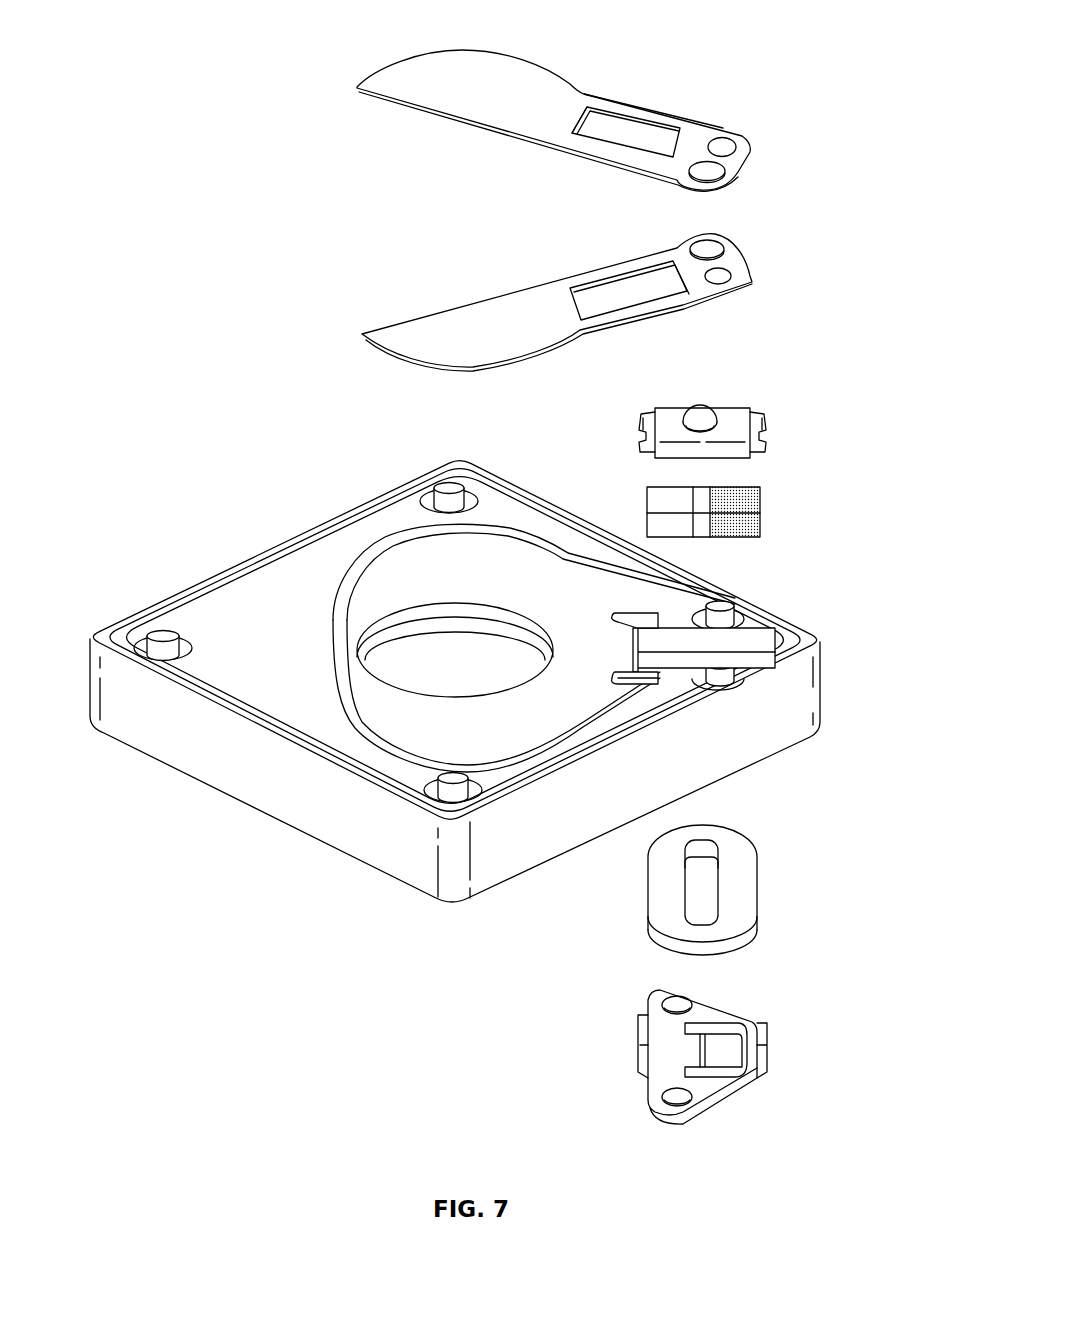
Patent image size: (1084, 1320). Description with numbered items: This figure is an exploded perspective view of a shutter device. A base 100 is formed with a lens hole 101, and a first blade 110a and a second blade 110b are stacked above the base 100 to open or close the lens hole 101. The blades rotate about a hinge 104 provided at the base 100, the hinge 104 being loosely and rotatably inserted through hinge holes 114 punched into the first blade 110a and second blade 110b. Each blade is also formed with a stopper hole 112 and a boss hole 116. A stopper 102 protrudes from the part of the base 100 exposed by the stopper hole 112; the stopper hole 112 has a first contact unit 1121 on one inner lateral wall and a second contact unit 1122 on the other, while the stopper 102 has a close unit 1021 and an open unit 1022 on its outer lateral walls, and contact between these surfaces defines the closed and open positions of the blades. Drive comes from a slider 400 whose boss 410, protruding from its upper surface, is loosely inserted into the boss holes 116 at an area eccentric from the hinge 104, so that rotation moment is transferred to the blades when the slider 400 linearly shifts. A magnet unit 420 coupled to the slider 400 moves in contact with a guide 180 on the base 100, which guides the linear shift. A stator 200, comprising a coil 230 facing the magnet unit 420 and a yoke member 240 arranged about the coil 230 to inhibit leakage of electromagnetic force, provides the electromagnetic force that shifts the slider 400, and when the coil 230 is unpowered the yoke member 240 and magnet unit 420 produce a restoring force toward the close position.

The base 100 is at (245, 607).
The lens hole 101 is at (450, 613).
The stopper 102 is at (633, 670).
The close unit 1021 is at (637, 684).
The open unit 1022 is at (625, 670).
The hinge 104 is at (719, 606).
The guide 180 is at (740, 645).
The first blade 110a is at (437, 70).
The second blade 110b is at (430, 328).
The stopper hole 112 is at (645, 140).
The first contact unit 1121 is at (633, 117).
The second contact unit 1122 is at (598, 137).
The hinge hole 114 is at (721, 278).
The boss hole 116 is at (710, 250).
The slider 400 is at (699, 406).
The boss 410 is at (698, 412).
The magnet unit 420 is at (757, 508).
The stator 200 is at (768, 974).
The coil 230 is at (755, 898).
The yoke member 240 is at (765, 1040).